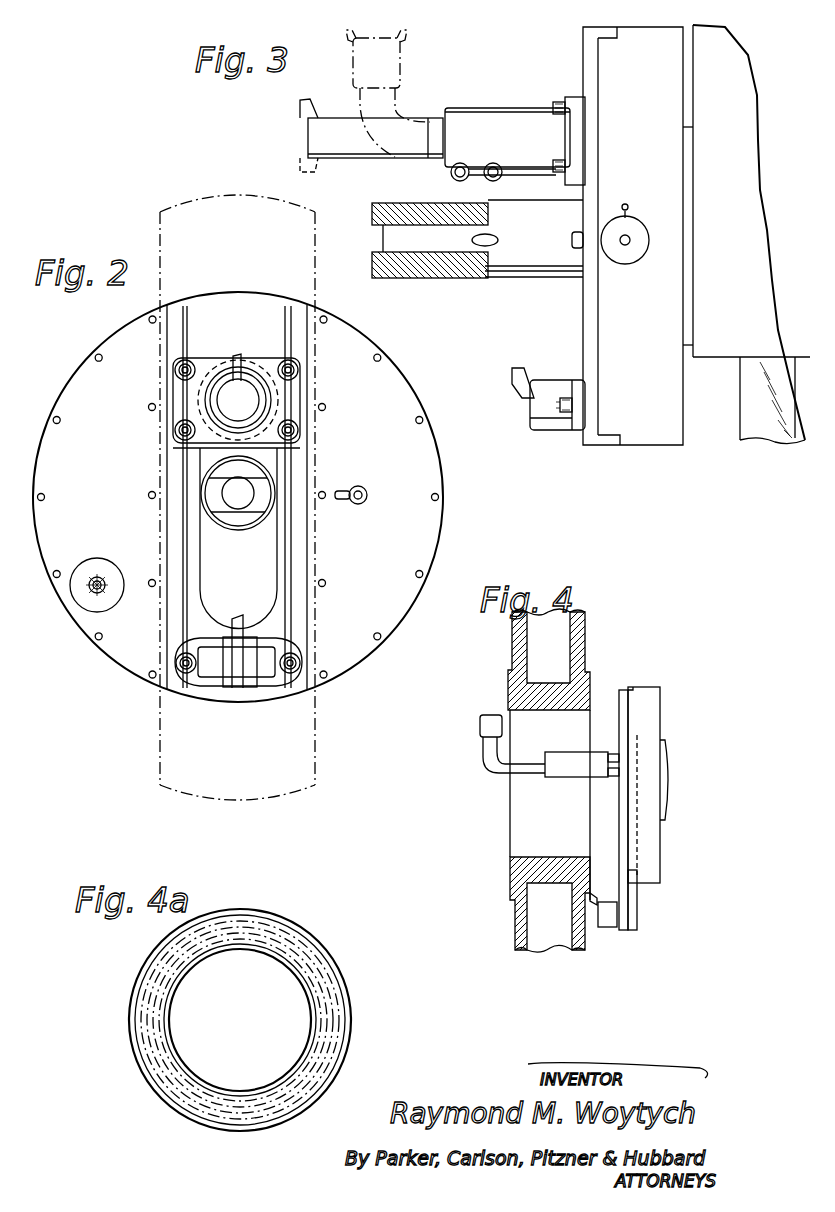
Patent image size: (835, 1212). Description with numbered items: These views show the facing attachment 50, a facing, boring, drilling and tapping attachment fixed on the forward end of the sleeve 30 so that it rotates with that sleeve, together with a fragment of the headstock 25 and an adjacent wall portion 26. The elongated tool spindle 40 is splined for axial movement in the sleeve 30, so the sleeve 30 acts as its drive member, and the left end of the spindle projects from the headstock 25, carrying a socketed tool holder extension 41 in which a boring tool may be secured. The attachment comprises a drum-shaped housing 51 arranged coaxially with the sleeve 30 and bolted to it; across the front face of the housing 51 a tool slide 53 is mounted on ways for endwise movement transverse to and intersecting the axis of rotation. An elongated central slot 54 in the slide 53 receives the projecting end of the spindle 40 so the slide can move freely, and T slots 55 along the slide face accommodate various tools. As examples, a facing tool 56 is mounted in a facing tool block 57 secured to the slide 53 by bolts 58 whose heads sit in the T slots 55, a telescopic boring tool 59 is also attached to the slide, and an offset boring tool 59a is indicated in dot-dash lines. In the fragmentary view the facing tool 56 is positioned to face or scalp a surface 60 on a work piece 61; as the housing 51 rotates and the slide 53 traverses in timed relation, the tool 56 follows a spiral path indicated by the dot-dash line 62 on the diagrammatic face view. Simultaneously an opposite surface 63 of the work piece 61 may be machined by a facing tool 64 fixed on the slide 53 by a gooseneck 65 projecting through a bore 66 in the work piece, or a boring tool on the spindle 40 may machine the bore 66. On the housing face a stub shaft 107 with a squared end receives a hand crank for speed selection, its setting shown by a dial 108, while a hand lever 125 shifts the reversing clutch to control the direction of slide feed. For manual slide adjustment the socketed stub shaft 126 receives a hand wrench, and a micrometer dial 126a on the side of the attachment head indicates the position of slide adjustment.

In FIG. 3, the headstock 25 is at (724, 345).
In FIG. 3, the wall section 26 is at (745, 418).
In FIG. 4, the sleeve 30 is at (668, 772).
In FIG. 2, the tool spindle 40 is at (234, 524).
In FIG. 3, the tool spindle 40 is at (527, 252).
In FIG. 3, the socketed tool holder extension 41 is at (433, 277).
In FIG. 2, the facing attachment 50 is at (100, 350).
In FIG. 3, the facing attachment 50 is at (585, 448).
In FIG. 4, the facing attachment 50 is at (664, 725).
In FIG. 2, the housing 51 is at (78, 362).
In FIG. 3, the housing 51 is at (648, 440).
In FIG. 4, the housing 51 is at (655, 838).
In FIG. 2, the tool slide 53 is at (308, 613).
In FIG. 4, the tool slide 53 is at (626, 917).
In FIG. 2, the central slot 54 is at (276, 563).
In FIG. 2, the T slots 55 is at (188, 332).
In FIG. 2, the facing tool 56 is at (241, 618).
In FIG. 3, the facing tool 56 is at (525, 368).
In FIG. 4, the facing tool 56 is at (595, 896).
In FIG. 2, the facing tool block 57 is at (215, 641).
In FIG. 3, the facing tool block 57 is at (543, 428).
In FIG. 4, the facing tool block 57 is at (607, 928).
In FIG. 3, the bolts 58 is at (560, 396).
In FIG. 2, the telescopic boring tool 59 is at (217, 400).
In FIG. 3, the telescopic boring tool 59 is at (368, 162).
In FIG. 3, the offset boring tool 59a is at (410, 86).
In FIG. 4, the surface 60 is at (590, 690).
In FIG. 4A, the surface 60 is at (326, 966).
In FIG. 4, the work piece 61 is at (504, 882).
In FIG. 4A, the work piece 61 is at (330, 940).
In FIG. 4A, the dot-dash line 62 is at (295, 935).
In FIG. 4, the opposite surface 63 is at (512, 688).
In FIG. 4, the facing tool 64 is at (505, 716).
In FIG. 4, the conduit 65 is at (496, 768).
In FIG. 4, the bore 66 is at (512, 857).
In FIG. 4A, the bore 66 is at (252, 950).
In FIG. 2, the stub shaft 107 is at (101, 577).
In FIG. 2, the dial 108 is at (82, 568).
In FIG. 2, the hand lever 125 is at (361, 487).
In FIG. 3, the hand lever 125 is at (572, 240).
In FIG. 3, the stub shaft 126 is at (631, 243).
In FIG. 3, the micrometer dial 126a is at (640, 218).